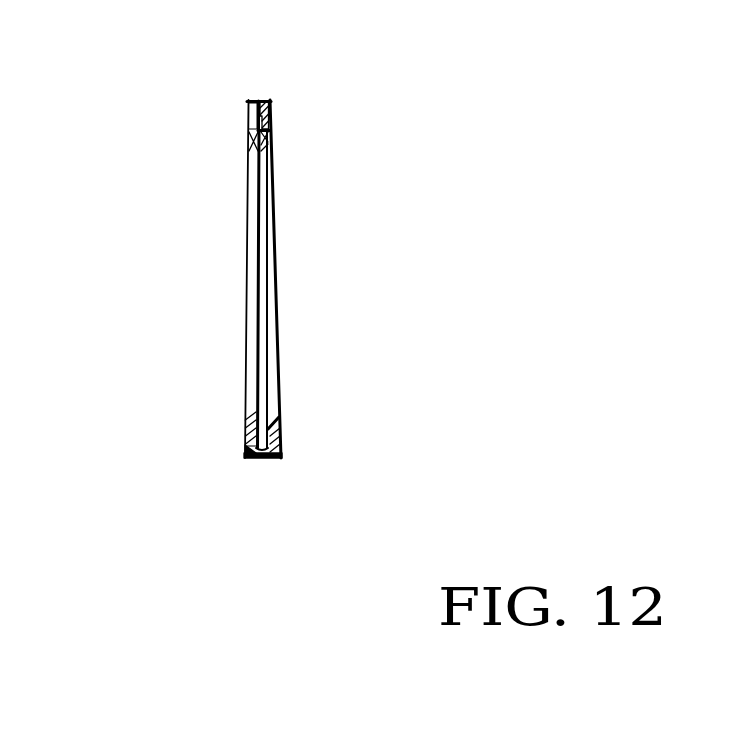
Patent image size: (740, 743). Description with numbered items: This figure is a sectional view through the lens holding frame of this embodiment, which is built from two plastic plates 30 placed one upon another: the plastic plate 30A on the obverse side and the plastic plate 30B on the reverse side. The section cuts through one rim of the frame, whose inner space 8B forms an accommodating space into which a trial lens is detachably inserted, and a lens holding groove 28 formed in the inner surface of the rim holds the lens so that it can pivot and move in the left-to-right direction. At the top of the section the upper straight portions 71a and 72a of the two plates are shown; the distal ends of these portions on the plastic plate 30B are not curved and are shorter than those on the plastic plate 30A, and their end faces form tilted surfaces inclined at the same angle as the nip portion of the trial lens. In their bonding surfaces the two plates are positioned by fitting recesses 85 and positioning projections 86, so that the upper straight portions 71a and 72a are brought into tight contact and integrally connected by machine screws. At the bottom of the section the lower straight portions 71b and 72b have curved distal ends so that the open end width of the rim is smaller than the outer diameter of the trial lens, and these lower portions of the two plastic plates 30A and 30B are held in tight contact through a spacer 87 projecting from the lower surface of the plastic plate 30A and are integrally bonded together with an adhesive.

The plastic plates 30 is at (310, 42).
The plastic plate on the obverse side 30A is at (252, 99).
The plastic plate on the reverse side 30B is at (260, 98).
The upper straight portion of the rim 71 71a is at (248, 118).
The upper straight portion of the rim 72 72a is at (270, 127).
The fitting recesses 85 is at (250, 132).
The positioning projections 86 is at (258, 141).
The inner space of the rim 72 8B is at (244, 342).
The lens holding groove 28 is at (247, 405).
The lower straight portion of the rim 71 71b is at (243, 436).
The lower straight portion of the rim 72 72b is at (282, 440).
The spacer 87 is at (252, 460).